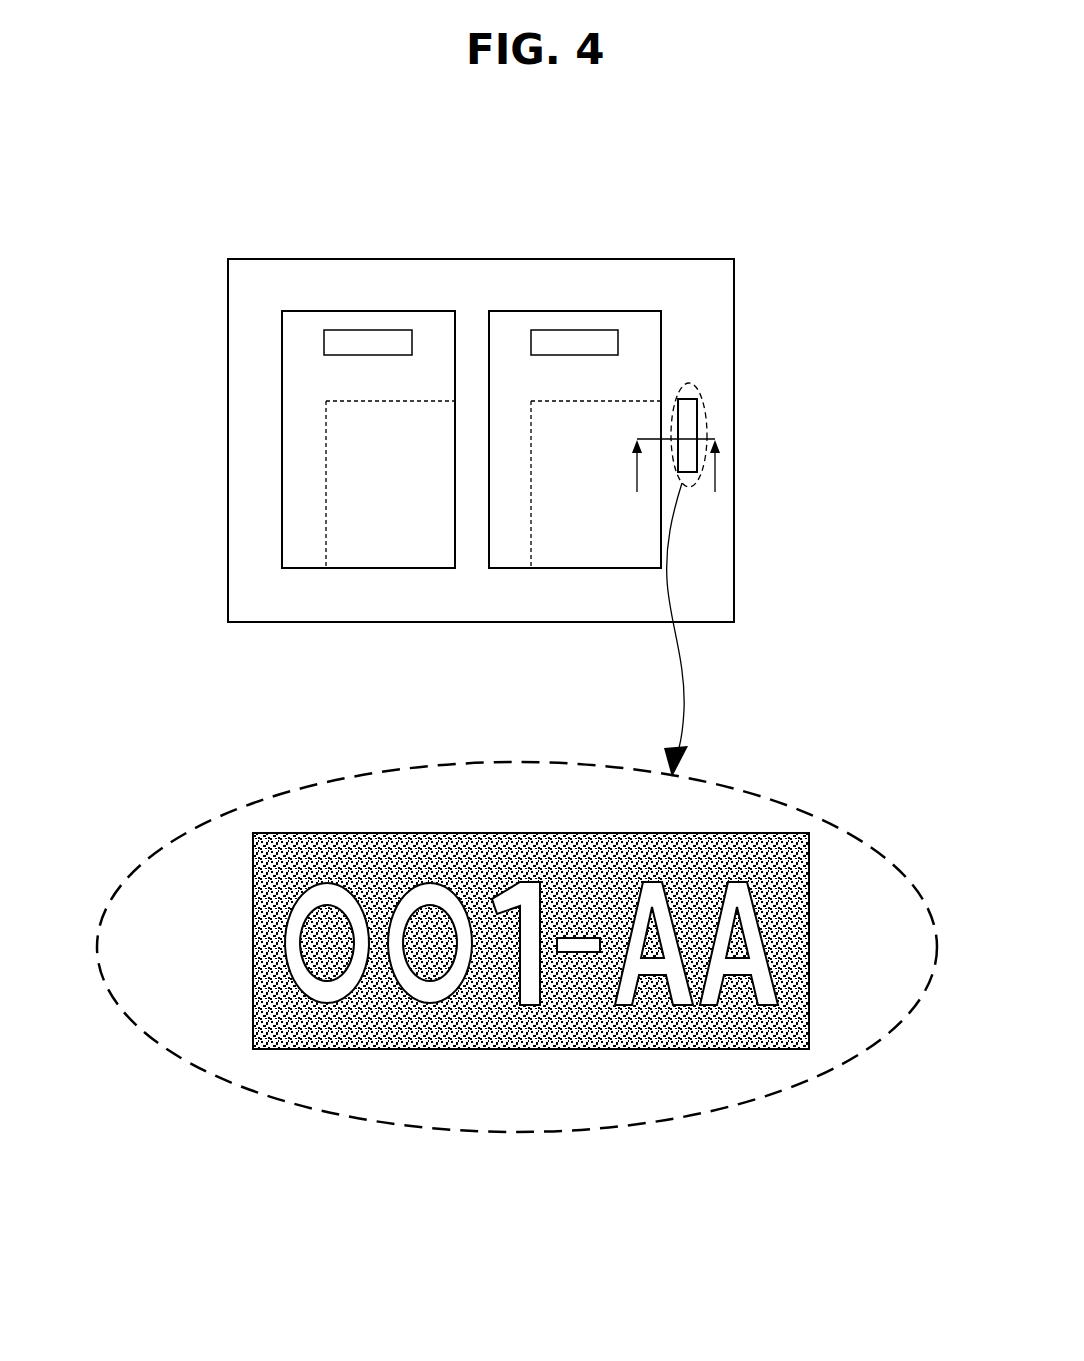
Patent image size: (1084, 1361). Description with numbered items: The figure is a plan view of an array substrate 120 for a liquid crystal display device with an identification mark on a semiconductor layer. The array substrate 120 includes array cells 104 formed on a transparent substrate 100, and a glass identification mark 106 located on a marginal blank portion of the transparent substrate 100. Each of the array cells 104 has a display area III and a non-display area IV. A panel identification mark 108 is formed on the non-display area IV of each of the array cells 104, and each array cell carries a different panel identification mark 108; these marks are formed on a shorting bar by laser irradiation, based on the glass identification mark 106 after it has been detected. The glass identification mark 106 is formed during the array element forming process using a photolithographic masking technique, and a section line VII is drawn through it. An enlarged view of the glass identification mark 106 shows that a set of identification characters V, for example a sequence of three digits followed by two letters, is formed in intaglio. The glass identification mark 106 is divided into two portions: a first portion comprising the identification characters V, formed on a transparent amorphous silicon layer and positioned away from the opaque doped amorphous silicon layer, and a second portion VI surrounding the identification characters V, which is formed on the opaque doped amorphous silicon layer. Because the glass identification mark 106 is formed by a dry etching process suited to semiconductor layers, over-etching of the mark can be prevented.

The array substrate 120 is at (800, 232).
The transparent substrate 100 is at (708, 323).
The array cells 104 is at (425, 303).
The panel identification mark 108 is at (330, 331).
The glass identification mark 106 is at (698, 418).
The display area III is at (403, 553).
The non-display area IV is at (297, 553).
The section VII is at (671, 483).
The identification characters V is at (710, 1000).
The portion surrounding the identification characters VI is at (805, 870).